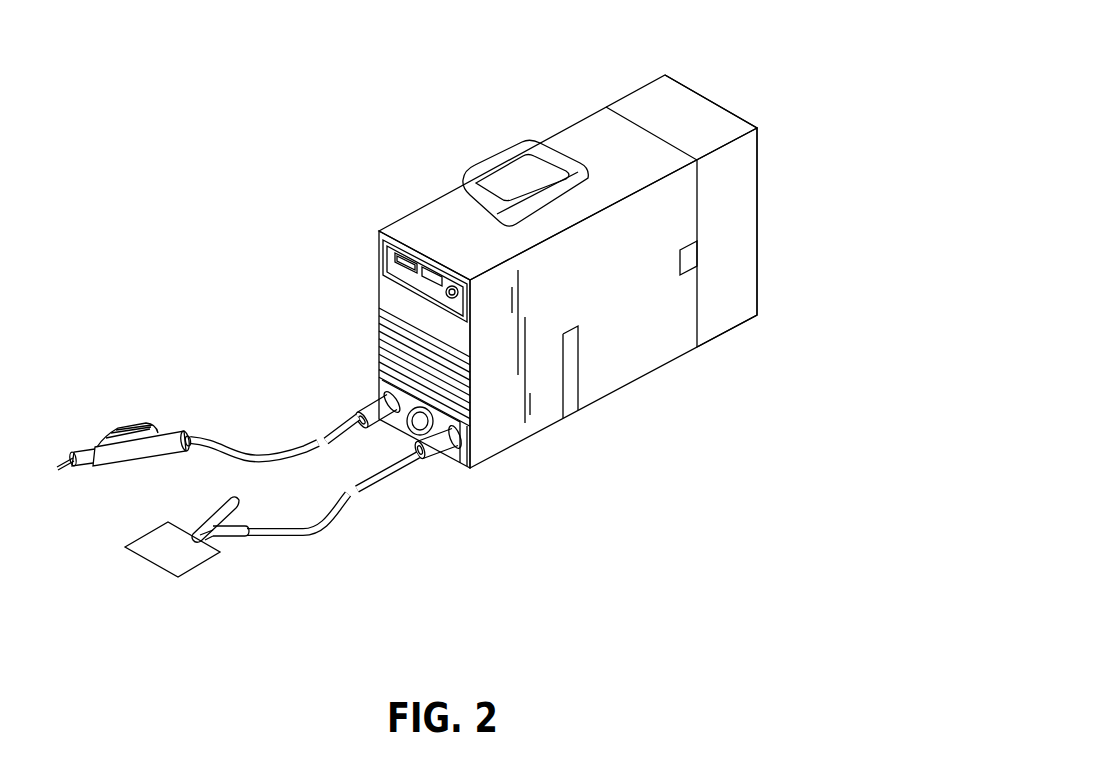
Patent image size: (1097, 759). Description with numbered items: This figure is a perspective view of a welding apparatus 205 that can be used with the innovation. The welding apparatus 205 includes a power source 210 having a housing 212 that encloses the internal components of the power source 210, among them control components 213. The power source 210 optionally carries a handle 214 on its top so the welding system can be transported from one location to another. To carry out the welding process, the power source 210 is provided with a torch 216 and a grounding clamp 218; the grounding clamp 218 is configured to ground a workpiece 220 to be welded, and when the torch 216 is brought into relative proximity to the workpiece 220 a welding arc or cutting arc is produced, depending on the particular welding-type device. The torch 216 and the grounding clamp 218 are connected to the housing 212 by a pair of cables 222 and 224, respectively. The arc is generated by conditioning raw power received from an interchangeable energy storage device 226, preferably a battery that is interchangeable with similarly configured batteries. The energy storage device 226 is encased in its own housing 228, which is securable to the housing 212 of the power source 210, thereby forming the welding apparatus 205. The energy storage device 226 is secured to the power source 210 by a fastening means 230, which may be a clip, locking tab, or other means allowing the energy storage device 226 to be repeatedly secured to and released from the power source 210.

The welding apparatus 205 is at (325, 67).
The power source 210 is at (408, 233).
The housing 212 is at (569, 299).
The control components 213 is at (578, 380).
The handle 214 is at (513, 147).
The torch 216 is at (167, 431).
The grounding clamp 218 is at (228, 505).
The workpiece 220 is at (147, 560).
The cable 222 is at (242, 450).
The cable 224 is at (307, 535).
The energy storage device 226 is at (712, 87).
The housing 228 is at (740, 227).
The fastening means 230 is at (680, 263).